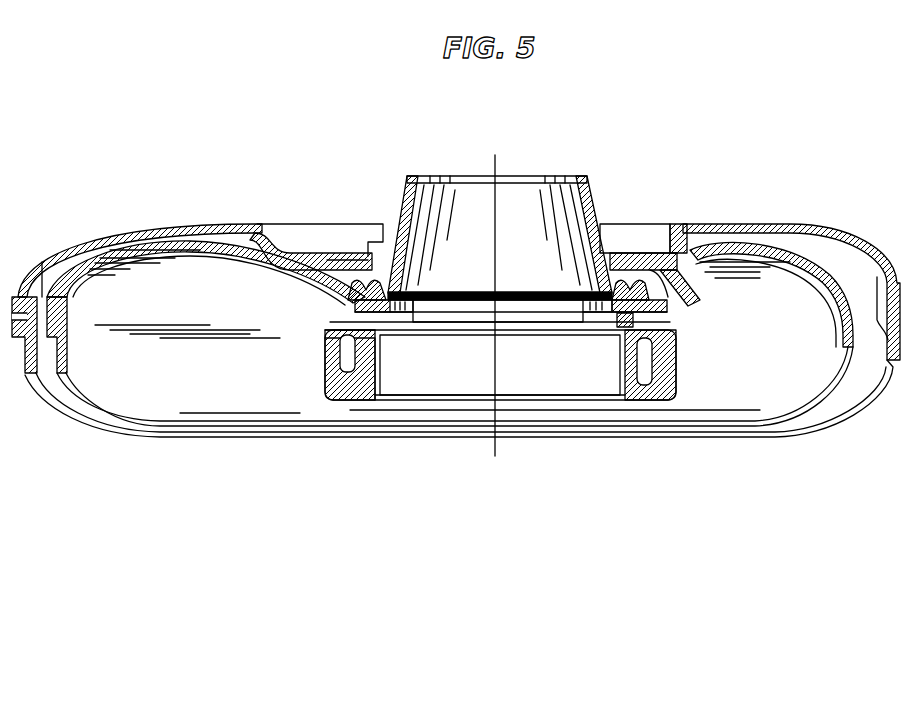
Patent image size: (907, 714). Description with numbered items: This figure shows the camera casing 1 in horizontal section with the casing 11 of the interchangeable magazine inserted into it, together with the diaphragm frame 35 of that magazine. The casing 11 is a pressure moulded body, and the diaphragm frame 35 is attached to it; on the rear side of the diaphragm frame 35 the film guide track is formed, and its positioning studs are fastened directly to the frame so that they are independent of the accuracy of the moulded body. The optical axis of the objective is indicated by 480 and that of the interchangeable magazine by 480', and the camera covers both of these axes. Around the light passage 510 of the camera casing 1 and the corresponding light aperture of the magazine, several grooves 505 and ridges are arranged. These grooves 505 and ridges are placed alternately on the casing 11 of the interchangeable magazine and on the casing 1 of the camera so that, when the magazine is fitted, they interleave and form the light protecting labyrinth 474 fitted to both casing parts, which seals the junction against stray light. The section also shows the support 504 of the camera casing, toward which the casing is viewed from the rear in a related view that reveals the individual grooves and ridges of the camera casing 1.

The camera casing 1 is at (853, 243).
The casing of the interchangeable magazine 11 is at (845, 317).
The diaphragm frame 35 is at (672, 357).
The light protecting labyrinth 474 is at (633, 320).
The optical axis of the objective 480 is at (495, 214).
The optical axis of the interchangeable magazine 480' is at (495, 390).
The support 504 is at (413, 208).
The grooves 505 is at (358, 312).
The light passage 510 is at (585, 224).